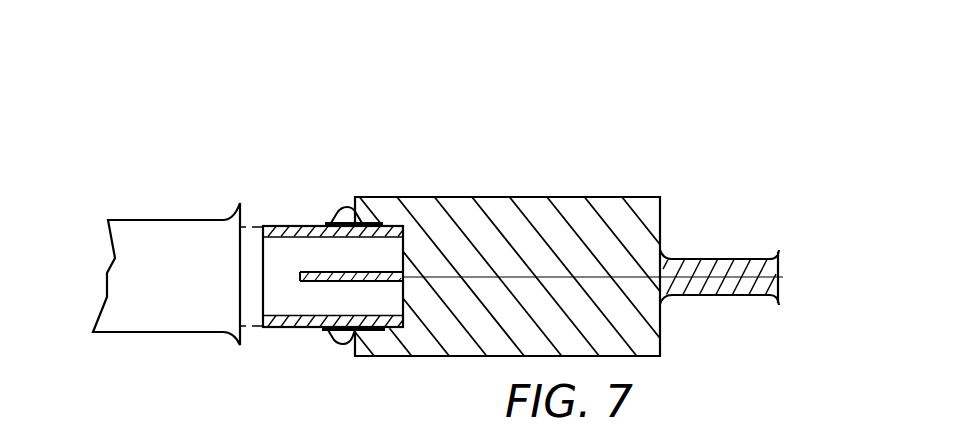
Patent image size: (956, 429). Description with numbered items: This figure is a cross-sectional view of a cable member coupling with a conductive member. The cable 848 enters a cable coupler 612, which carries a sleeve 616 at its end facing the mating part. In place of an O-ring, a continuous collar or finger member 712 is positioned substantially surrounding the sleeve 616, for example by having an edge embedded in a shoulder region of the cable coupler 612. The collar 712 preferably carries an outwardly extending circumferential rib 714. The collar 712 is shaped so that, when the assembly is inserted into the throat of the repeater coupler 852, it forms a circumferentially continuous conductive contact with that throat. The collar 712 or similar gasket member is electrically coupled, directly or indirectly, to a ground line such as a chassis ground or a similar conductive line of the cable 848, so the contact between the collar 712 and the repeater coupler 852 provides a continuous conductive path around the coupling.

The cable coupler 612 is at (471, 172).
The sleeve 616 is at (314, 224).
The collar or finger member 712 is at (330, 338).
The circumferential rib 714 is at (350, 347).
The cable 848 is at (715, 259).
The repeater coupler 852 is at (258, 229).